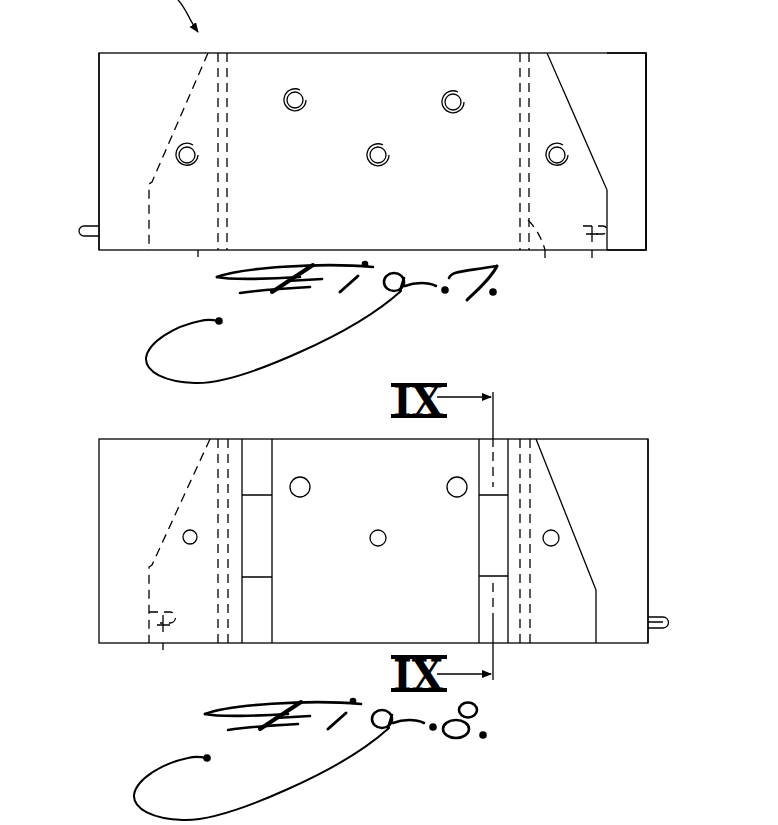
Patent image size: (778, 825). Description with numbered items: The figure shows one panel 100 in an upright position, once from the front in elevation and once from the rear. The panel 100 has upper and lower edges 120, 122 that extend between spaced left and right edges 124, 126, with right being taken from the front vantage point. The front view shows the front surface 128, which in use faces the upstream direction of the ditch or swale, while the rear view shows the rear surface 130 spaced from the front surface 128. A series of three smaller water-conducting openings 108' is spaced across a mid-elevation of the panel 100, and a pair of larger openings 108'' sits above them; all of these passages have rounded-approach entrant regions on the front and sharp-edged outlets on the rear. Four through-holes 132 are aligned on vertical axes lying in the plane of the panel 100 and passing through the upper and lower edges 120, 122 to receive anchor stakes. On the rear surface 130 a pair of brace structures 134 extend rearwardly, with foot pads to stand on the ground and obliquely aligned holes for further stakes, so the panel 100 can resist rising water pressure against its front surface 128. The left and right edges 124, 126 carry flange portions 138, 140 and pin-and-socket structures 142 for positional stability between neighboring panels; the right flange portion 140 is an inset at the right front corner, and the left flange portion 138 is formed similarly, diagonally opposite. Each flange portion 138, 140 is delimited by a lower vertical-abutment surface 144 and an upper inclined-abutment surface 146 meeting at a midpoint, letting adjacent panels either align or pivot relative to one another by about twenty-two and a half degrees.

In FIG. 7, the panel 100 is at (174, 16).
In FIG. 8, the panel 100 is at (600, 421).
In FIG. 7, the water-conducting openings 108' is at (372, 170).
In FIG. 7, the openings 108'' is at (374, 91).
In FIG. 7, the upper edge 120 is at (323, 53).
In FIG. 7, the lower edge 122 is at (198, 257).
In FIG. 7, the left edge 124 is at (99, 117).
In FIG. 7, the right edge 126 is at (646, 117).
In FIG. 7, the front surface 128 is at (304, 216).
In FIG. 8, the rear surface 130 is at (384, 618).
In FIG. 7, the through-holes 132 is at (546, 260).
In FIG. 8, the brace structures 134 is at (253, 625).
In FIG. 8, the left flange portion 138 is at (635, 475).
In FIG. 7, the right flange portion 140 is at (598, 72).
In FIG. 7, the pin-and-socket structures 142 is at (86, 226).
In FIG. 8, the pin-and-socket structures 142 is at (163, 643).
In FIG. 7, the lower vertical-abutment surface 144 is at (607, 203).
In FIG. 8, the lower vertical-abutment surface 144 is at (596, 601).
In FIG. 7, the upper inclined-abutment surface 146 is at (553, 62).
In FIG. 8, the upper inclined-abutment surface 146 is at (565, 513).